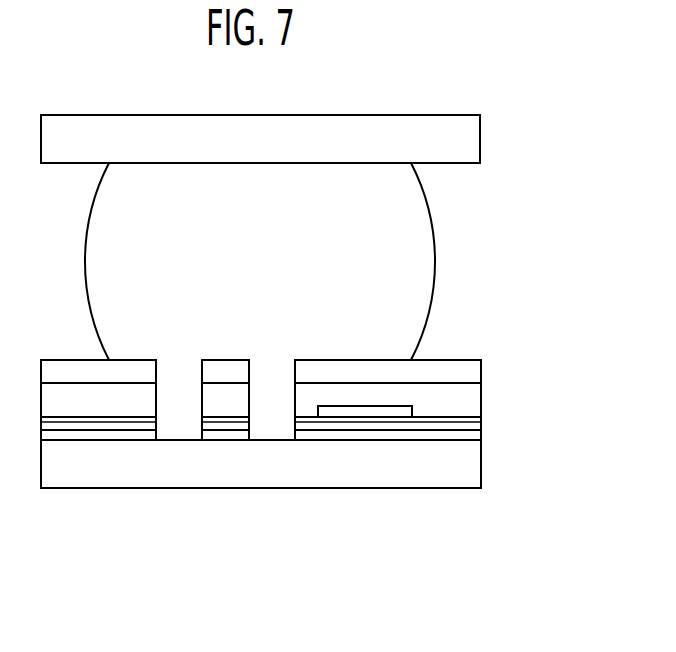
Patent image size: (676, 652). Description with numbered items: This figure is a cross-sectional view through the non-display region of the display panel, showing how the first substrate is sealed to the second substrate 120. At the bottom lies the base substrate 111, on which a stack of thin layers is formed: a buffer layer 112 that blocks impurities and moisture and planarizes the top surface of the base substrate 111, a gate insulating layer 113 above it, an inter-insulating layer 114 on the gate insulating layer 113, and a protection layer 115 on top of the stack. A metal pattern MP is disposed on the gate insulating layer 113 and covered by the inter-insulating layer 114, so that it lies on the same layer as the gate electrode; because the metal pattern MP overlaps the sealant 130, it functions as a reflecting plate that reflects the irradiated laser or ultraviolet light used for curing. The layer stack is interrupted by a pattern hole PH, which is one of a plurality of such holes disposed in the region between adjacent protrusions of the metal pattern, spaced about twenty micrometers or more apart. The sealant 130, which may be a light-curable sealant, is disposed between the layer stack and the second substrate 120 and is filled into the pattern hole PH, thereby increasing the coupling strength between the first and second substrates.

The second substrate 120 is at (468, 138).
The sealant 130 is at (415, 272).
The protection layer 115 is at (468, 365).
The inter-insulating layer 114 is at (468, 400).
The gate insulating layer 113 is at (468, 423).
The buffer layer 112 is at (468, 437).
The base substrate 111 is at (468, 468).
The metal pattern MP is at (370, 412).
The pattern hole PH is at (179, 432).